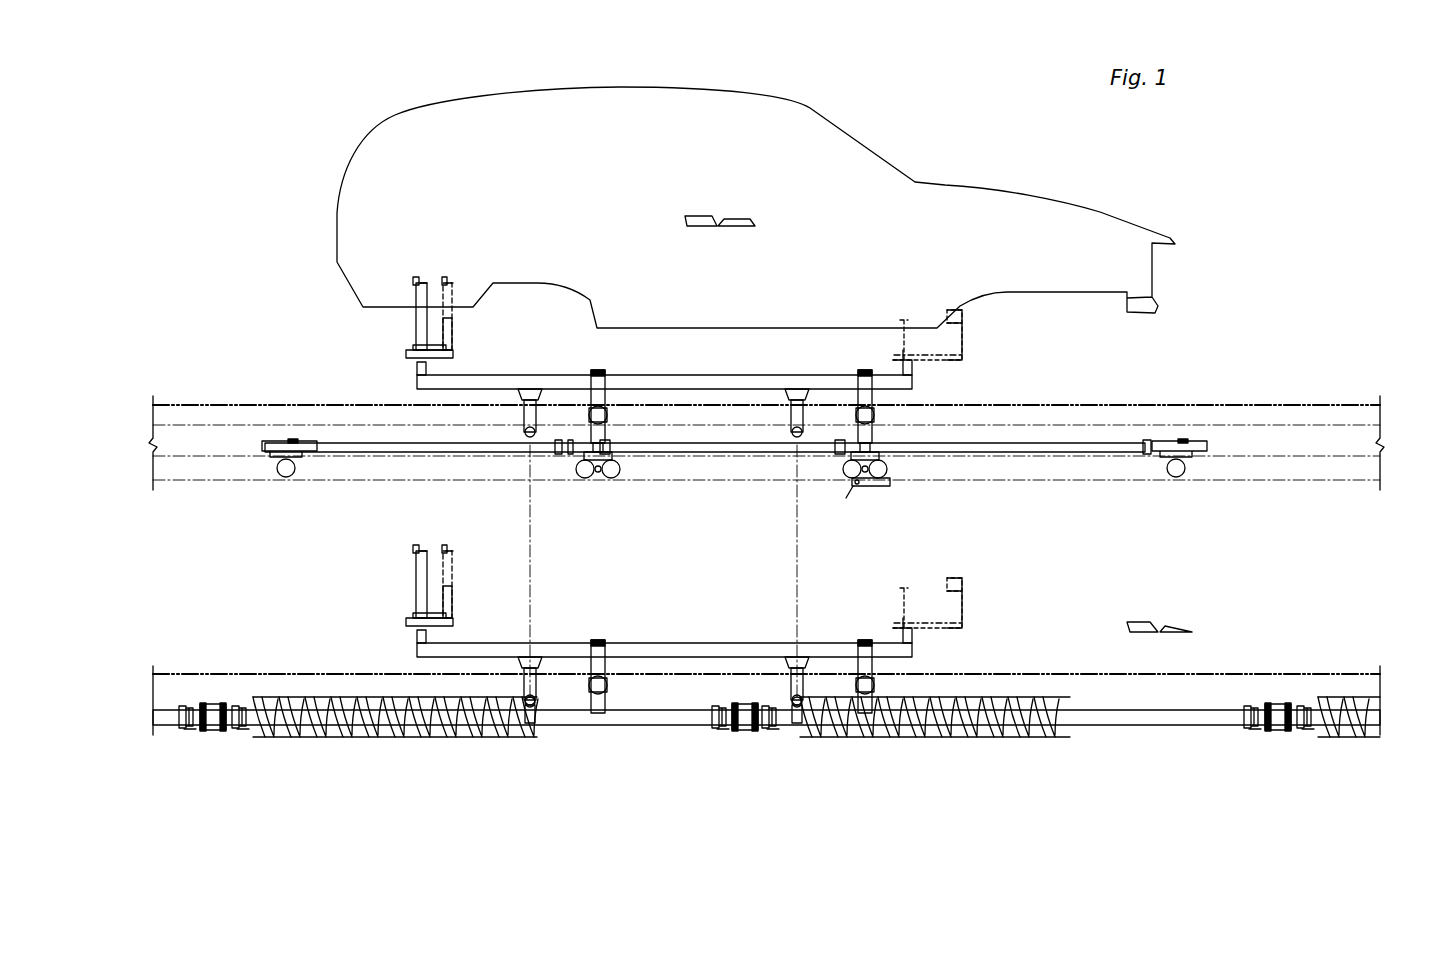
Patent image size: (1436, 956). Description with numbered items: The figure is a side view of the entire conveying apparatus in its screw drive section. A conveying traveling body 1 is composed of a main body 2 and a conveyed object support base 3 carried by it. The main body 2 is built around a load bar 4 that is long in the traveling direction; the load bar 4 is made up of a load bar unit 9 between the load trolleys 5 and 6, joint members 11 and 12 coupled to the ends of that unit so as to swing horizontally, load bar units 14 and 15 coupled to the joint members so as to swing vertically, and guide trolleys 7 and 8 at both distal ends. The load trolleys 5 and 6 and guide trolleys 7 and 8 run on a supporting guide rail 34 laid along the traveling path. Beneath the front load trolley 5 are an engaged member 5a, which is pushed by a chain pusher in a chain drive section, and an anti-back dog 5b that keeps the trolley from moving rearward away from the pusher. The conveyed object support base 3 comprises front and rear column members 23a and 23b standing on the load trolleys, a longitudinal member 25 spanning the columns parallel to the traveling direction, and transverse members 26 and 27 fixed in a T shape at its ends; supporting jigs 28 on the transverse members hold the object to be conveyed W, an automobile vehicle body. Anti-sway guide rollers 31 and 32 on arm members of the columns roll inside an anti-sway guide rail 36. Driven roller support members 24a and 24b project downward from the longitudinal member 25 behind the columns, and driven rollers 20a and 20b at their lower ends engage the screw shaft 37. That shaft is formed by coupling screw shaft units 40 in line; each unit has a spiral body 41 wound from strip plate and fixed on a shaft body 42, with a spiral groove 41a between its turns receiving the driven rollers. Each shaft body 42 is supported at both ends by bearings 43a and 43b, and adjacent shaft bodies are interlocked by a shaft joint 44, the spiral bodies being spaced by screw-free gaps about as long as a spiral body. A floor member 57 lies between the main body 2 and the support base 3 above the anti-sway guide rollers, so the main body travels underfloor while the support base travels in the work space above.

The object to be conveyed W is at (850, 170).
The conveying traveling body 1 is at (797, 373).
The main body 2 is at (1095, 438).
The conveyed object support base 3 is at (713, 375).
The load bar 4 is at (400, 455).
The load trolley 5 is at (848, 486).
The engaged member 5a is at (884, 486).
The anti-back dog 5b is at (862, 486).
The load trolley 6 is at (603, 480).
The guide trolley 7 is at (1178, 446).
The guide trolley 8 is at (287, 440).
The load bar unit 9 is at (707, 455).
The joint member 11 is at (887, 443).
The joint member 12 is at (558, 440).
The load bar unit 14 is at (1050, 443).
The load bar unit 15 is at (353, 441).
The driven roller 20a is at (795, 437).
The driven roller 20b is at (530, 437).
The column member 23a is at (862, 412).
The column member 23b is at (602, 412).
The driven roller support member 24a is at (792, 416).
The driven roller support member 24b is at (526, 418).
The longitudinal member 25 is at (757, 388).
The transverse member 26 is at (948, 340).
The transverse member 27 is at (417, 368).
The supporting jig 28 is at (447, 280).
The anti-sway guide roller 31 is at (868, 372).
The anti-sway guide roller 32 is at (598, 372).
The supporting guide rail 34 is at (1277, 482).
The anti-sway guide rail 36 is at (1278, 405).
The screw shaft 37 is at (925, 745).
The screw shaft unit 40 is at (320, 737).
The spiral body 41 is at (380, 737).
The spiral groove 41a is at (455, 737).
The shaft body 42 is at (165, 712).
The bearing 43a is at (187, 730).
The bearing 43b is at (240, 730).
The shaft joint 44 is at (212, 732).
The floor member 57 is at (1357, 405).